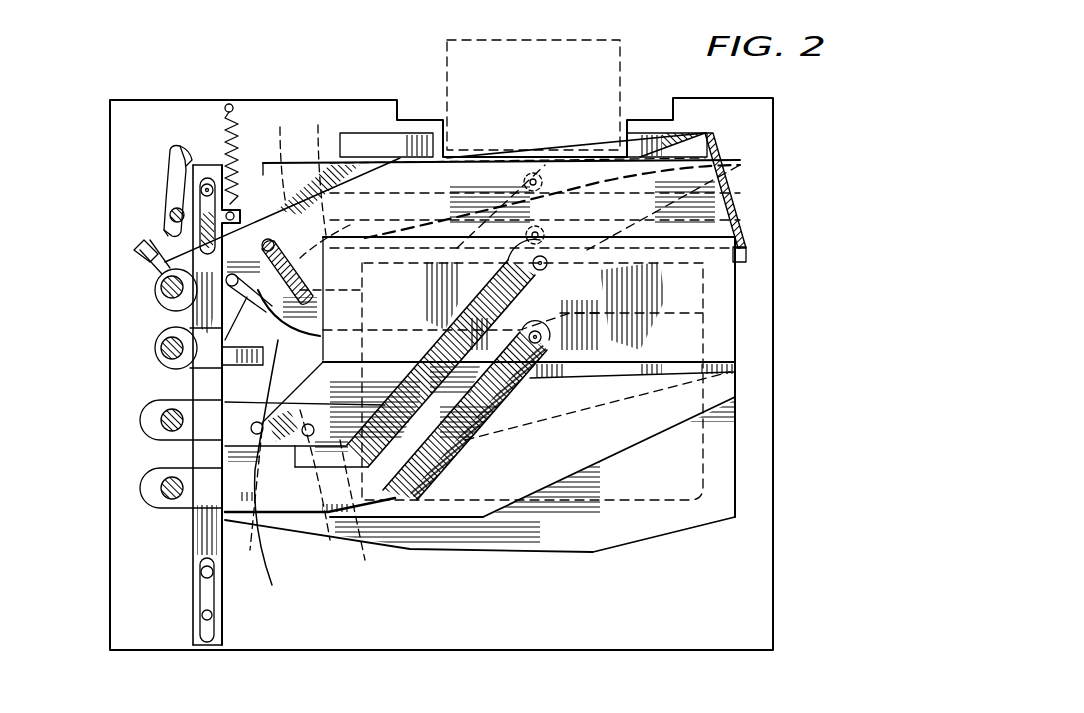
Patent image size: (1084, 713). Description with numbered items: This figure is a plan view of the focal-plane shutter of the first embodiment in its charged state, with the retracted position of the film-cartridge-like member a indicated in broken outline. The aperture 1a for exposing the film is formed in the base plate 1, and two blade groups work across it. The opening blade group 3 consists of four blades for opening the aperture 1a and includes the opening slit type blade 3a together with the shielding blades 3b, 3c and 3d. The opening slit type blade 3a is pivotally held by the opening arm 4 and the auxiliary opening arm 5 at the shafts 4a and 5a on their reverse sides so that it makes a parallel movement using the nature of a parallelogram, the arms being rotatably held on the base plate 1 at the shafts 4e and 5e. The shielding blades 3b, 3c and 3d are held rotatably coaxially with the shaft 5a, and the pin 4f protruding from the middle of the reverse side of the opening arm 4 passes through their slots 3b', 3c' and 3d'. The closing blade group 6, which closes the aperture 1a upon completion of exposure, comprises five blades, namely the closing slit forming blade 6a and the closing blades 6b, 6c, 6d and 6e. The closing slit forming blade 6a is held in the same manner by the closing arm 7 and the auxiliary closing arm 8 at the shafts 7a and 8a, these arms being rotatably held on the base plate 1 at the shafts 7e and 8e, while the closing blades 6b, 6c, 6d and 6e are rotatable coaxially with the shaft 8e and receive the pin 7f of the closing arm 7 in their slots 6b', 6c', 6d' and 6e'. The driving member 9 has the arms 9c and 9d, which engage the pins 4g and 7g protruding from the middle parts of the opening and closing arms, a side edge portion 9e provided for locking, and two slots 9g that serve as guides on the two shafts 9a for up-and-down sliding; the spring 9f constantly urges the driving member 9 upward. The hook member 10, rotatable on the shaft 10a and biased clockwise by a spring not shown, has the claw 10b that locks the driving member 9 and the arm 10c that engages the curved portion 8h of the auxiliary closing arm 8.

The base plate 1 is at (755, 568).
The aperture 1a is at (715, 487).
The tape cassette a is at (594, 72).
The opening blade group 3 is at (832, 320).
The opening slit type blade 3a is at (718, 335).
The shielding blade 3b is at (574, 379).
The shielding blade 3c is at (645, 444).
The shielding blade 3d is at (525, 500).
The slot 3b' is at (270, 523).
The slot 3c' is at (315, 503).
The slot 3d' is at (360, 521).
The opening arm 4 is at (180, 450).
The shaft 4a is at (547, 270).
The shaft 4e is at (165, 420).
The pin 4f is at (461, 337).
The pin 4g is at (260, 423).
The auxiliary opening arm 5 is at (162, 490).
The shaft 5a is at (528, 332).
The shaft 5e is at (165, 498).
The closing blade group 6 is at (832, 103).
The closing slit forming blade 6a is at (735, 141).
The closing blade 6b is at (576, 163).
The closing blade 6c is at (576, 190).
The closing blade 6d is at (576, 190).
The closing blade 6e is at (576, 261).
The slot 6b' is at (283, 151).
The slot 6c' is at (308, 176).
The slot 6d' is at (347, 227).
The slot 6e' is at (350, 295).
The closing arm 7 is at (158, 345).
The shaft 7a is at (545, 232).
The shaft 7e is at (160, 358).
The pin 7f is at (266, 240).
The pin 7g is at (272, 301).
The auxiliary closing arm 8 is at (160, 298).
The shaft 8a is at (543, 180).
The shaft 8e is at (165, 285).
The curved portion 8h is at (134, 247).
The driving member 9 is at (210, 540).
The shaft 9a is at (205, 572).
The arm 9c is at (262, 528).
The arm 9d is at (246, 365).
The side edge portion 9e is at (208, 185).
The spring 9f is at (227, 105).
The slot 9g is at (205, 612).
The hook member 10 is at (176, 188).
The shaft 10a is at (170, 213).
The claw 10b is at (186, 160).
The arm 10c is at (172, 232).